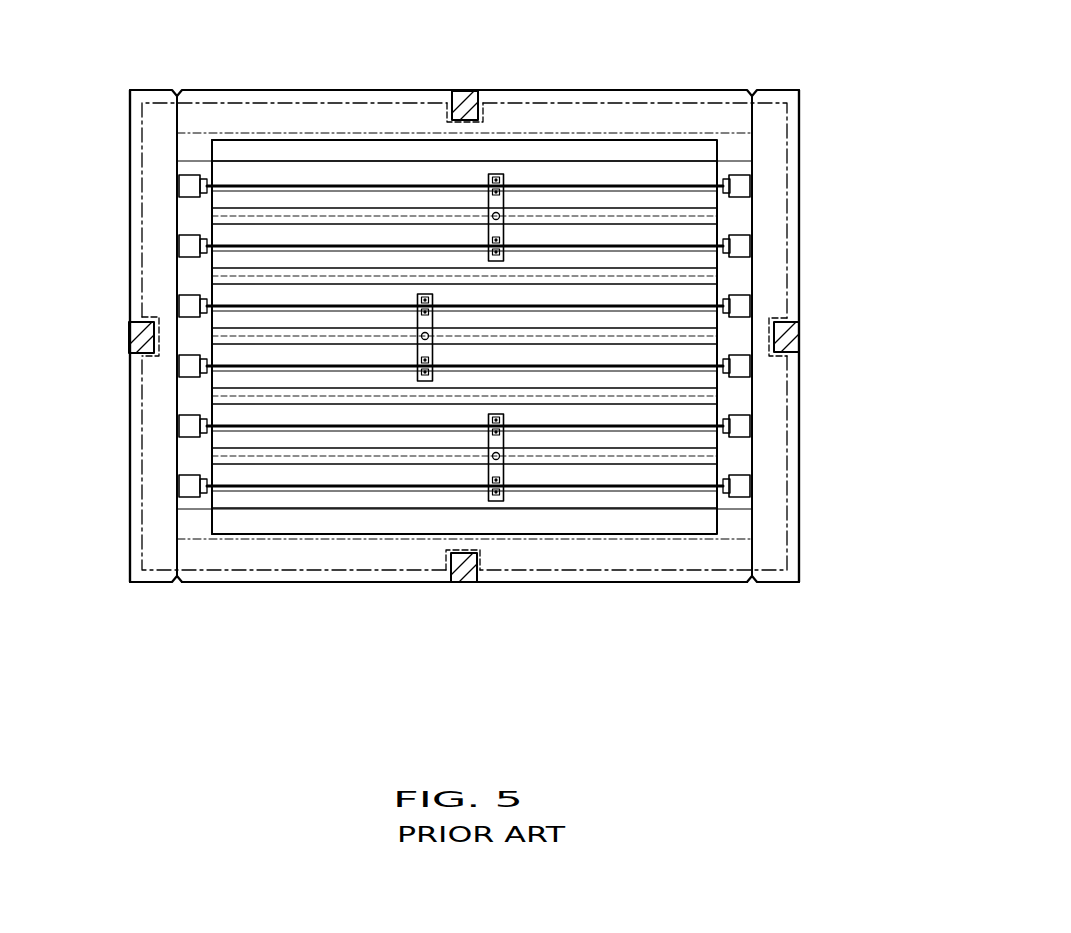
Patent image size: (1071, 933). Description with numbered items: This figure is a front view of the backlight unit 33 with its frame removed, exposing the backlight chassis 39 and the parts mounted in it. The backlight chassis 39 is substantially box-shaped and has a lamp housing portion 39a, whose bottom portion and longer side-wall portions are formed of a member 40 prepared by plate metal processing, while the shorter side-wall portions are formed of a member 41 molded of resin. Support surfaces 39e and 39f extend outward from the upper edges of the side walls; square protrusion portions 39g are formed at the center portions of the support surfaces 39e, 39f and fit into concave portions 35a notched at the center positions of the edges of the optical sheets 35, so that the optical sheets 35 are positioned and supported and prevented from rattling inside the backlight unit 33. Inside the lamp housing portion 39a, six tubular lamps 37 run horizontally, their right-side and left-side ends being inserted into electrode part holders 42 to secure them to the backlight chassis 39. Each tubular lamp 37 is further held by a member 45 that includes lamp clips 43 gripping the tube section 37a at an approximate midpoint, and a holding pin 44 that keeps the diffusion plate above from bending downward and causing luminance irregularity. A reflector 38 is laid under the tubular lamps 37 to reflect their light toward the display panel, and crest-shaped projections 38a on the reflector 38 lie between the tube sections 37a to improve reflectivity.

The backlight unit 33 is at (212, 602).
The optical sheets 35 is at (790, 146).
The concave portions 35a is at (452, 113).
The tubular lamps 37 is at (247, 180).
The tube sections 37a is at (293, 185).
The reflector 38 is at (207, 264).
The projections 38a is at (220, 455).
The backlight chassis 39 is at (660, 597).
The lamp housing portion 39a is at (750, 293).
The support surface 39e is at (664, 117).
The support surface 39f is at (153, 227).
The protrusion portions 39g is at (463, 88).
The member 40 is at (570, 584).
The member 41 is at (130, 539).
The electrode part holders 42 is at (192, 190).
The lamp clips 43 is at (425, 293).
The holding pin 44 is at (423, 341).
The member 45 is at (417, 342).